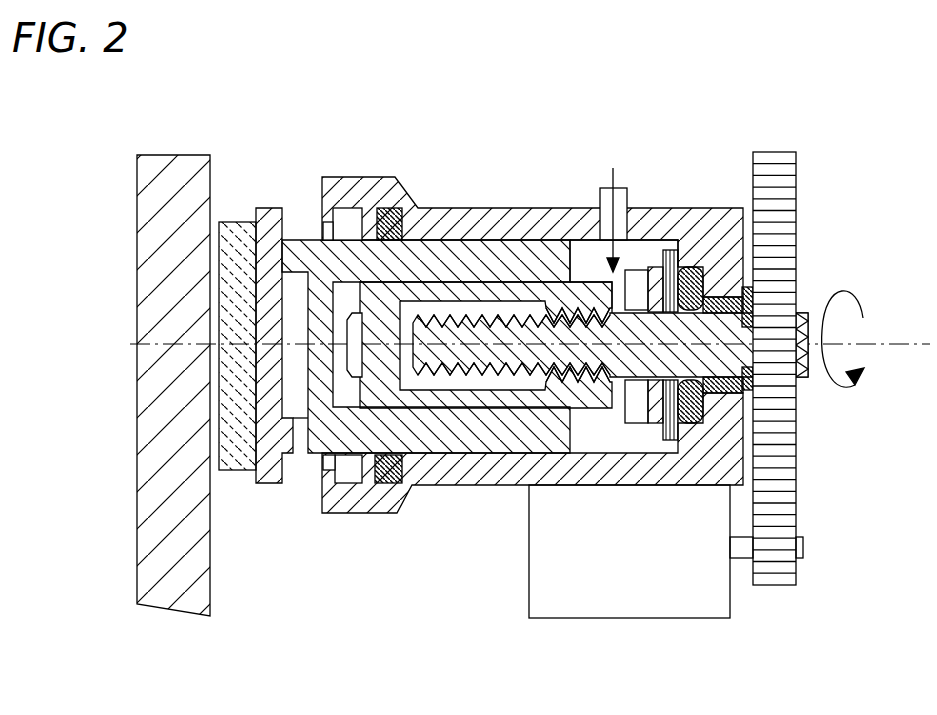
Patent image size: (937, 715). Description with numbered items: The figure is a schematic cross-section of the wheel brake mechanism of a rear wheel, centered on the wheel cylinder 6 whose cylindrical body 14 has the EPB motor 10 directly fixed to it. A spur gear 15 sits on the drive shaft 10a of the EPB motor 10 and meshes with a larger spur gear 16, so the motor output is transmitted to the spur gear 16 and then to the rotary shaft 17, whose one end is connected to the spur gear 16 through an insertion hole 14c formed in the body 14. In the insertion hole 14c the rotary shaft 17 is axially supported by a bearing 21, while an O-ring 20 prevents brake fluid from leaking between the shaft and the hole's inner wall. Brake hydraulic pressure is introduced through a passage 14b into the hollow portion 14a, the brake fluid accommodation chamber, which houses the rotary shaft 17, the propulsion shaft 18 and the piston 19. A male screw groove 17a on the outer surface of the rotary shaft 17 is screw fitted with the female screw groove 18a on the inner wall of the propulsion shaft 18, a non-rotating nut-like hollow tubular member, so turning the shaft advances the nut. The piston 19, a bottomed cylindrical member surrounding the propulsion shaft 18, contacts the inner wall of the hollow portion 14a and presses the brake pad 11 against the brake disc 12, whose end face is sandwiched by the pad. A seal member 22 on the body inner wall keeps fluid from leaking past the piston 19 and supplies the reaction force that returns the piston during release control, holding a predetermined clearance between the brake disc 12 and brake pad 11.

The wheel cylinder (W/C) 6 is at (503, 190).
The EPB motor 10 is at (601, 619).
The drive shaft 10a is at (744, 560).
The brake pad 11 is at (236, 473).
The brake disc 12 is at (137, 452).
The body 14 is at (541, 206).
The hollow portion 14a is at (587, 252).
The passage 14b is at (624, 208).
The insertion hole 14c is at (752, 318).
The spur gear 15 is at (798, 568).
The spur gear 16 is at (798, 193).
The rotary shaft 17 is at (753, 345).
The male screw groove 17a is at (520, 374).
The propulsion shaft 18 is at (459, 402).
The female screw groove 18a is at (599, 384).
The piston 19 is at (426, 437).
The O-ring 20 is at (699, 425).
The bearing 21 is at (713, 395).
The seal member 22 is at (388, 485).